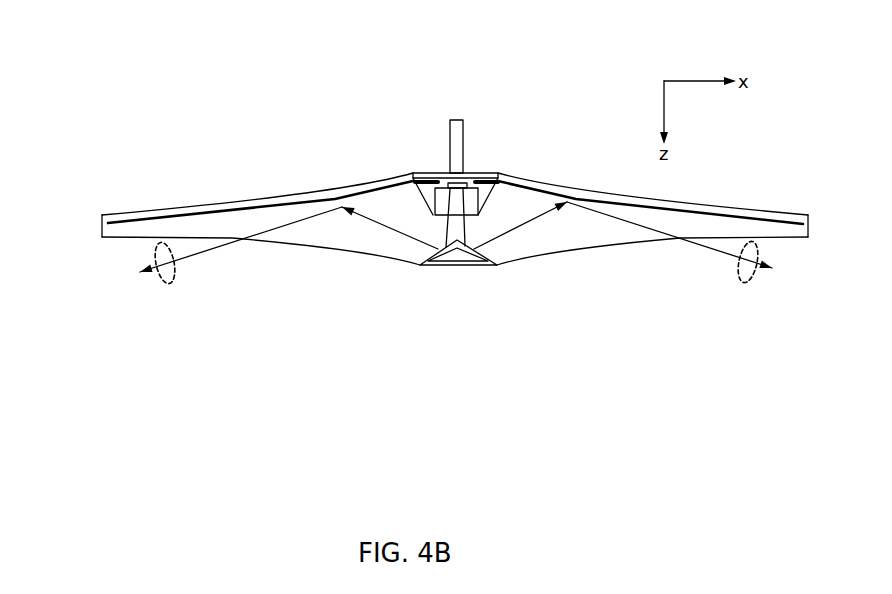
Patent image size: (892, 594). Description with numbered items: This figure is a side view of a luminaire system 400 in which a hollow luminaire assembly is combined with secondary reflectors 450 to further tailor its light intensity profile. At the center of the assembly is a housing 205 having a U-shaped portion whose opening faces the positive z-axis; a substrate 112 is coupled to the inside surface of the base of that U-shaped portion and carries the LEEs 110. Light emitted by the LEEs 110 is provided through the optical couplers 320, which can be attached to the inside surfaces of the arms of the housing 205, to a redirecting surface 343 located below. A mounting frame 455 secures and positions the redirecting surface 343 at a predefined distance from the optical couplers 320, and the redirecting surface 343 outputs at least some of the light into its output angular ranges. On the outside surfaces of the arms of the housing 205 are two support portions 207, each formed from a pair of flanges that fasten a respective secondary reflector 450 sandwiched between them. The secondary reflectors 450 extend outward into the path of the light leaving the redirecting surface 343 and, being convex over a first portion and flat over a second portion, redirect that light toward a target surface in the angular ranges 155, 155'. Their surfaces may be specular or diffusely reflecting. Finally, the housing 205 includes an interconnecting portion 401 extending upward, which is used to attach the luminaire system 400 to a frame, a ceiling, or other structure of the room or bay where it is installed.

The luminaire system 400 is at (190, 123).
The interconnecting portion 401 is at (463, 137).
The substrate 112 is at (450, 185).
The LEEs 110 is at (453, 188).
The support portions 207 is at (485, 173).
The optical couplers 320 is at (435, 205).
The secondary reflectors 450 is at (143, 222).
The mounting frame 455 is at (292, 228).
The housing 205 is at (482, 205).
The redirecting surface 343 is at (438, 277).
The angular range 155 is at (623, 255).
The angular range 155' is at (288, 257).